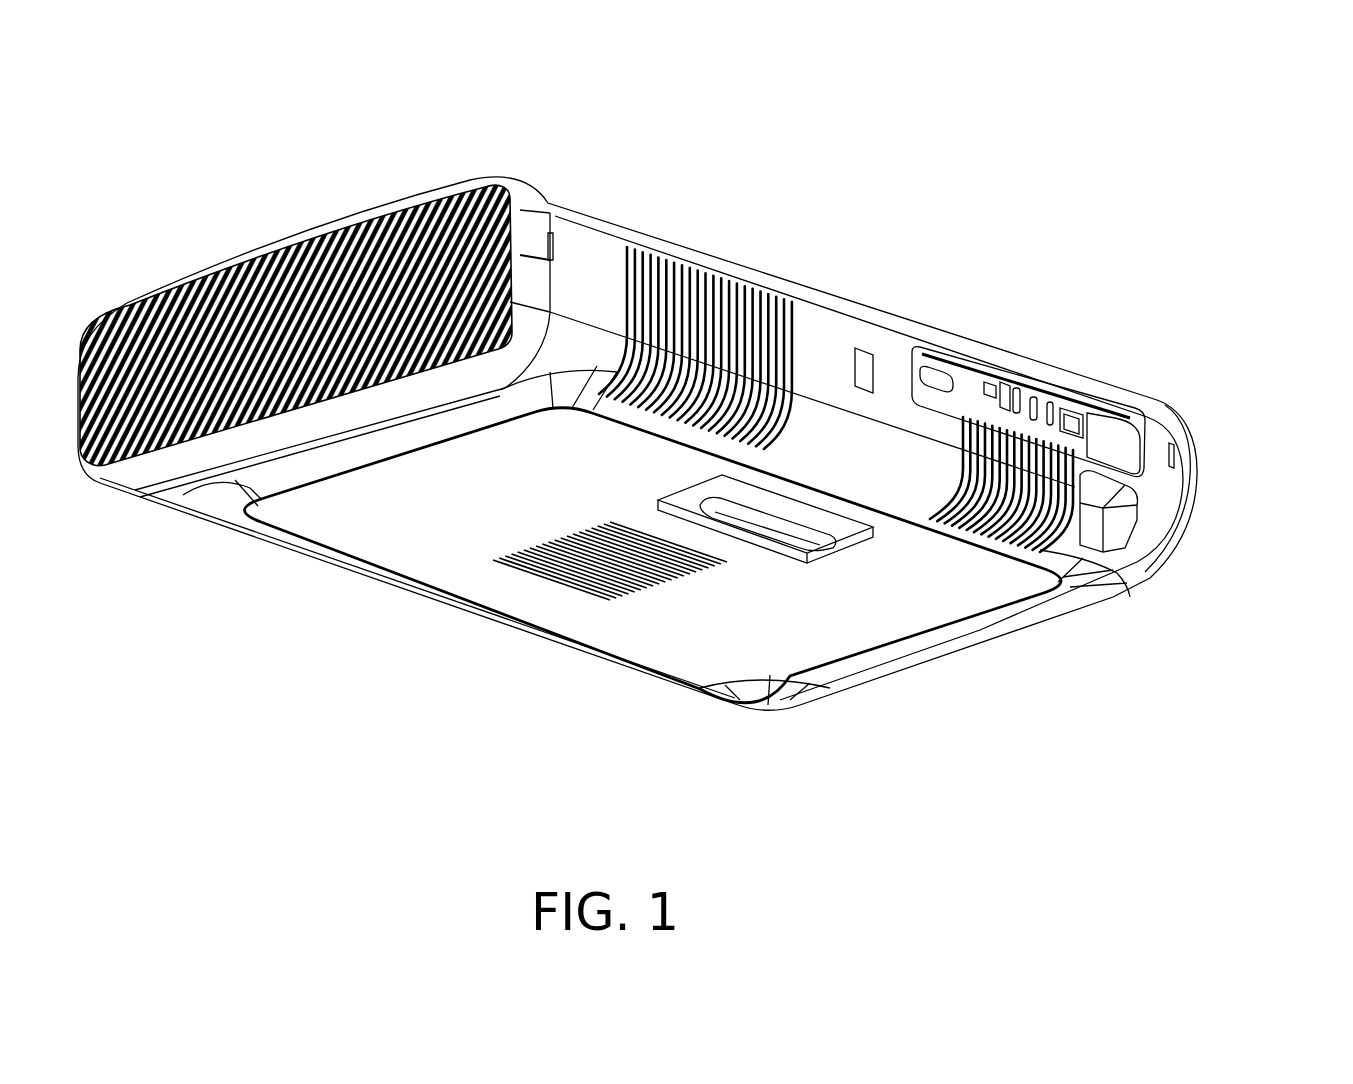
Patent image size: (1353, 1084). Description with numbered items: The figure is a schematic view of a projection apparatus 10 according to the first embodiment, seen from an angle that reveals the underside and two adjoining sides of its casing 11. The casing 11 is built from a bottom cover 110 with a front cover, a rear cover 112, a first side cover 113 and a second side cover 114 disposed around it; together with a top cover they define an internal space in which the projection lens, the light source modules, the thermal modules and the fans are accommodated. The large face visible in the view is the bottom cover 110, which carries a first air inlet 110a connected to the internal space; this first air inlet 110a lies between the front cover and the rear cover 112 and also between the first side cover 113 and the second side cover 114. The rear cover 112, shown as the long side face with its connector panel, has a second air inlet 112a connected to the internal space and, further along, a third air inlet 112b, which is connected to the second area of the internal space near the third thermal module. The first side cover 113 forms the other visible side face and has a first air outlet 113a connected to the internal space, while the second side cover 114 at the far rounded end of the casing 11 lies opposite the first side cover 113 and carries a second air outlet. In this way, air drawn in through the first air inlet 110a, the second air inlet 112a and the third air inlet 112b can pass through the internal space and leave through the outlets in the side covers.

The projection apparatus 10 is at (1223, 818).
The casing 11 is at (704, 431).
The bottom cover 110 is at (380, 543).
The first air inlet 110a is at (648, 610).
The rear cover 112 is at (830, 340).
The second air inlet 112a is at (602, 265).
The third air inlet 112b is at (910, 500).
The first side cover 113 is at (413, 200).
The first air outlet 113a is at (224, 462).
The second side cover 114 is at (1178, 415).